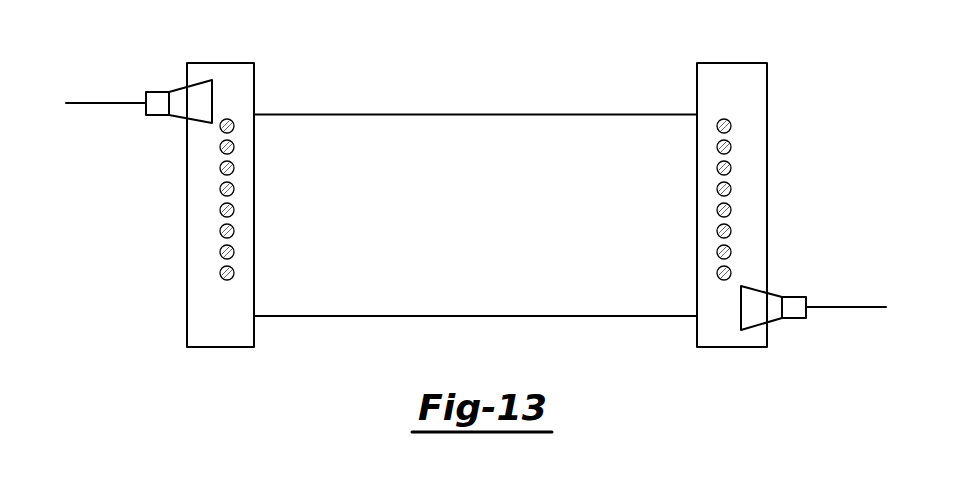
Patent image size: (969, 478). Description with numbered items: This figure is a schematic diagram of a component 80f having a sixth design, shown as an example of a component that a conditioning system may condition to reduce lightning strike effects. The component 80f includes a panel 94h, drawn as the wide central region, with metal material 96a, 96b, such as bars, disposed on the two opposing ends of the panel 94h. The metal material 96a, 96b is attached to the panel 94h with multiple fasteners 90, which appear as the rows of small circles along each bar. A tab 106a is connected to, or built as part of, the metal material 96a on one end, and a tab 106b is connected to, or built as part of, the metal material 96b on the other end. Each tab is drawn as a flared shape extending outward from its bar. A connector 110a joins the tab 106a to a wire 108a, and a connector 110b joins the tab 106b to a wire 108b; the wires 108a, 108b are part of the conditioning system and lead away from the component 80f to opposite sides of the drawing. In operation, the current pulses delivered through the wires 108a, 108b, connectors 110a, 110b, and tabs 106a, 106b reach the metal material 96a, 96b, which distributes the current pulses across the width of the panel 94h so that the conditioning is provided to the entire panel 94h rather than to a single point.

The component 80f is at (471, 96).
The fasteners 90 is at (731, 126).
The panel 94h is at (348, 316).
The metal material 96a is at (222, 347).
The metal material 96b is at (733, 347).
The tab 106a is at (202, 122).
The tab 106b is at (756, 325).
The wire 108a is at (87, 103).
The wire 108b is at (869, 307).
The connector 110a is at (158, 92).
The connector 110b is at (792, 297).